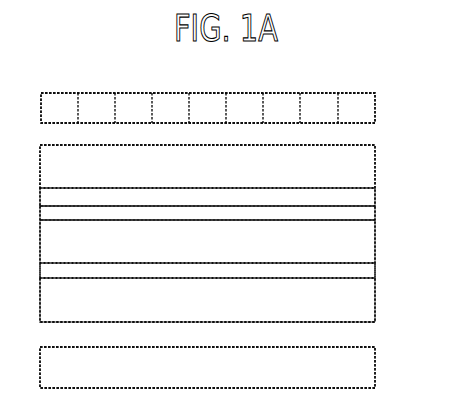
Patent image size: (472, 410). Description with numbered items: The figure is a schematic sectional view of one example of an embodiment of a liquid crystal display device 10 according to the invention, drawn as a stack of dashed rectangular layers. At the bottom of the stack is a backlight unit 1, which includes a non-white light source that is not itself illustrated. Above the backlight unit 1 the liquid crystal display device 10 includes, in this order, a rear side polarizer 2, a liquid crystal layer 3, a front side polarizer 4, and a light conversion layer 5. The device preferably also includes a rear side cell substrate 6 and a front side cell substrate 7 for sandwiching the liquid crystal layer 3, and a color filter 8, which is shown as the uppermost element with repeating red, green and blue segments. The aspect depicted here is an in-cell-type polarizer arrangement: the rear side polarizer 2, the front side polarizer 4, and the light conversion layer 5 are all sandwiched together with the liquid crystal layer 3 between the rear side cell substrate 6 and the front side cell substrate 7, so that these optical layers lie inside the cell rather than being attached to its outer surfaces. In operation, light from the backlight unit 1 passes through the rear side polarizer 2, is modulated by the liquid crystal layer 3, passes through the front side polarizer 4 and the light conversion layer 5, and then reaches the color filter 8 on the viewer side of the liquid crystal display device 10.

The backlight unit 1 is at (363, 368).
The rear side polarizer 2 is at (363, 271).
The liquid crystal layer 3 is at (363, 245).
The front side polarizer 4 is at (363, 214).
The light conversion layer 5 is at (363, 197).
The rear side cell substrate 6 is at (363, 304).
The front side cell substrate 7 is at (363, 157).
The color filter 8 is at (376, 108).
The liquid crystal display device 10 is at (352, 73).